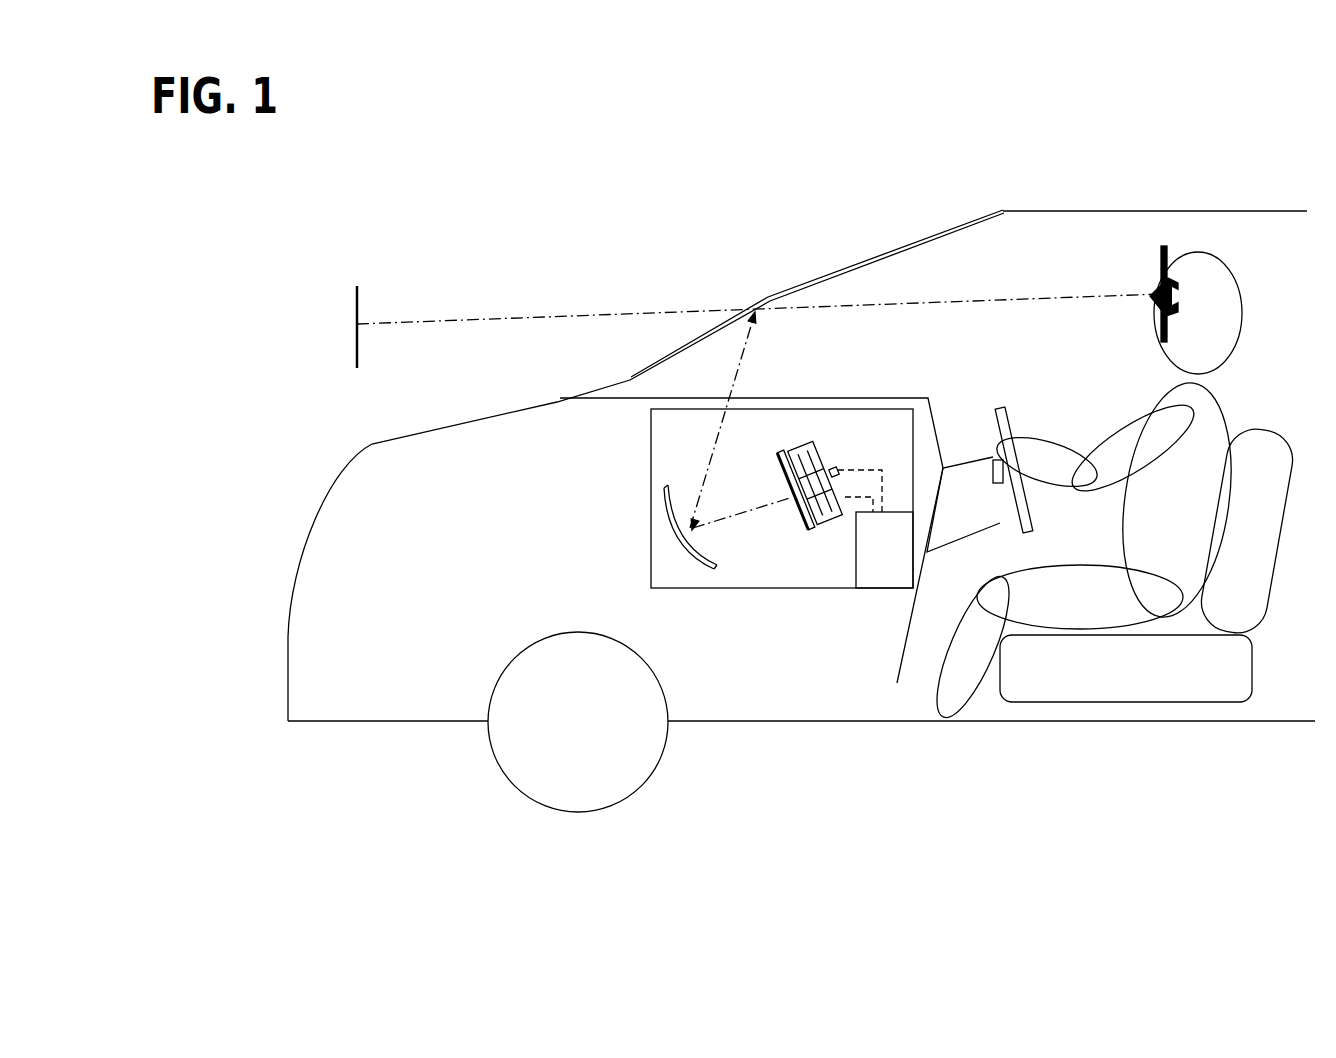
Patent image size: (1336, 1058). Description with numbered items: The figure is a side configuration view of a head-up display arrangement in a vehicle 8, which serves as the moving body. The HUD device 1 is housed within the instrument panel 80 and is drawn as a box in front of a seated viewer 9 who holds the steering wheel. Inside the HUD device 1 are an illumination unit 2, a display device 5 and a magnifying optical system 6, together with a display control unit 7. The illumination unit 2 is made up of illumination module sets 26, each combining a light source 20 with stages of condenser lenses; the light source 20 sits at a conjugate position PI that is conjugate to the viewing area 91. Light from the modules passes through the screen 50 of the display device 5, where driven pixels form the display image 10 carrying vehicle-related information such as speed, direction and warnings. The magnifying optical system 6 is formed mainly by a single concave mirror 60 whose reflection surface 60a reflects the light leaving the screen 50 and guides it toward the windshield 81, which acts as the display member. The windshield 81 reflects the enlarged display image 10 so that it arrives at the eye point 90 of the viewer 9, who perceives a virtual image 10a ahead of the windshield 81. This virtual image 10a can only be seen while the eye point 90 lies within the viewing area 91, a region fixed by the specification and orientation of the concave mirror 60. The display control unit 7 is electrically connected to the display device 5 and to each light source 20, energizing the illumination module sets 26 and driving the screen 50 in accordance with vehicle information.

The HUD device 1 is at (644, 438).
The illumination unit 2 is at (830, 497).
The display device 5 is at (757, 494).
The magnifying optical system 6 is at (641, 553).
The display control unit 7 is at (943, 427).
The vehicle 8 is at (1253, 211).
The viewer 9 is at (1237, 400).
The display image 10 is at (797, 501).
The virtual image 10a is at (358, 324).
The light source 20 is at (838, 466).
The illumination module 26 is at (830, 479).
The screen 50 is at (757, 494).
The concave mirror 60 is at (641, 553).
The reflection surface 60a is at (670, 502).
The instrument panel 80 is at (906, 397).
The windshield 81 is at (878, 258).
The eye point 90 is at (1157, 293).
The viewing area 91 is at (1162, 265).
The conjugate position PI is at (858, 589).